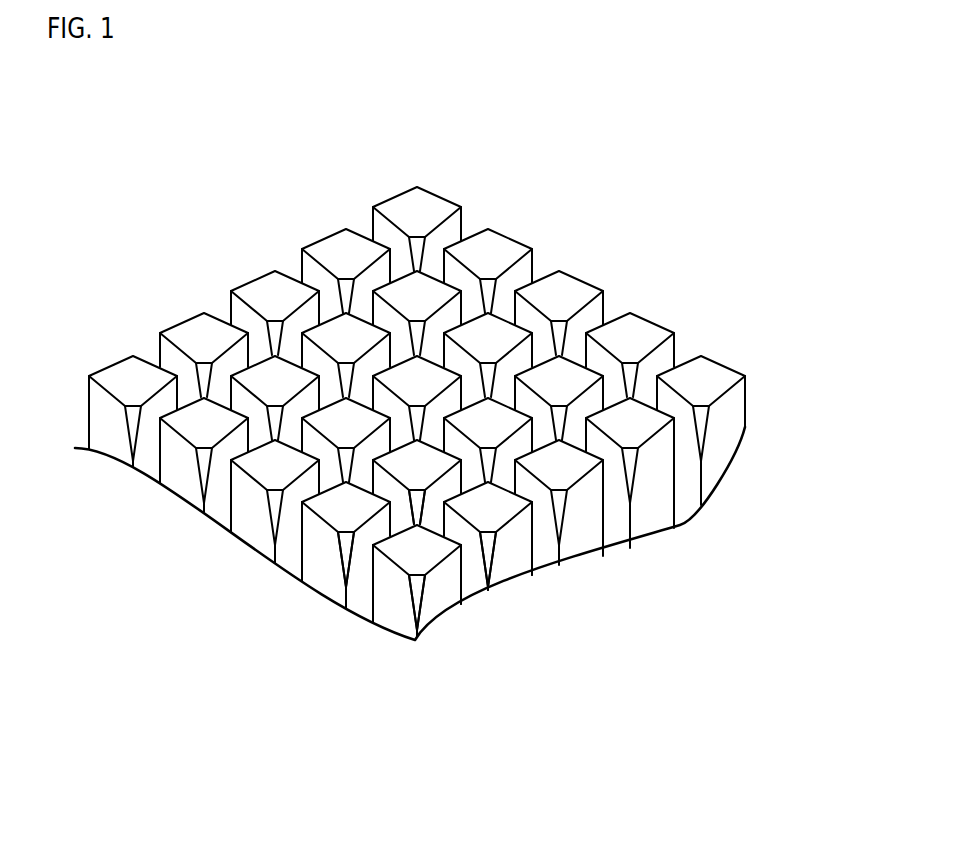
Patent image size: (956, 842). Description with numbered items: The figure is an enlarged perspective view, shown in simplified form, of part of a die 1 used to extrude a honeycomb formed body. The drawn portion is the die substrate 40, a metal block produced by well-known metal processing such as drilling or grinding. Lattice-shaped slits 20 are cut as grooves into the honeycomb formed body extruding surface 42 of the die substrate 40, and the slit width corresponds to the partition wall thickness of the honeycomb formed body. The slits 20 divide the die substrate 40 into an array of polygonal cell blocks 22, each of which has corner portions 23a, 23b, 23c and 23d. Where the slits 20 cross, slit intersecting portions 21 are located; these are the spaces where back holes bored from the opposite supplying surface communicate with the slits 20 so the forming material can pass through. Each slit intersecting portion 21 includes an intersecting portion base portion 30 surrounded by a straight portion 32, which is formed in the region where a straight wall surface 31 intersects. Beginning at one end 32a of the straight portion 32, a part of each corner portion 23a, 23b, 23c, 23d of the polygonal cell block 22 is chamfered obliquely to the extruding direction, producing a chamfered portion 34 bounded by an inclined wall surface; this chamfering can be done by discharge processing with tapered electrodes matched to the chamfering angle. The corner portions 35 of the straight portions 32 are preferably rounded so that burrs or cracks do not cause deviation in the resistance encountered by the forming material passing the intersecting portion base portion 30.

The die 1 is at (648, 133).
The slits 20 is at (417, 380).
The slit intersecting portions 21 is at (340, 279).
The polygonal cell block 22 is at (420, 200).
The corner portion 23a is at (417, 585).
The corner portion 23b is at (508, 570).
The corner portion 23c is at (447, 503).
The corner portion 23d is at (368, 549).
The intersecting portion base portion 30 is at (737, 441).
The straight wall surface 31 is at (708, 475).
The straight portion 32 is at (460, 533).
The one end of the straight portion 32a is at (701, 467).
The chamfered portion 34 is at (437, 596).
The corner portions 35 is at (688, 510).
The die substrate 40 is at (658, 225).
The honeycomb formed body extruding surface 42 is at (460, 427).